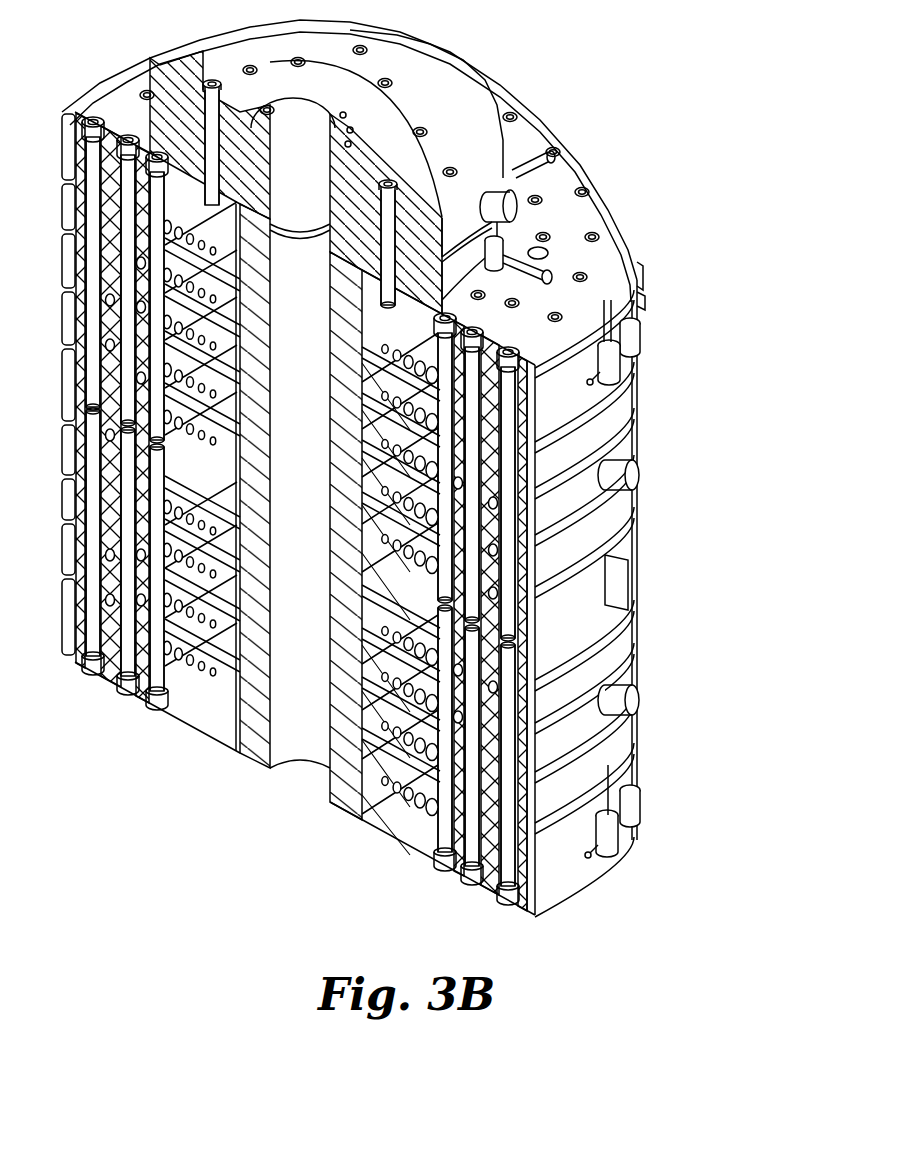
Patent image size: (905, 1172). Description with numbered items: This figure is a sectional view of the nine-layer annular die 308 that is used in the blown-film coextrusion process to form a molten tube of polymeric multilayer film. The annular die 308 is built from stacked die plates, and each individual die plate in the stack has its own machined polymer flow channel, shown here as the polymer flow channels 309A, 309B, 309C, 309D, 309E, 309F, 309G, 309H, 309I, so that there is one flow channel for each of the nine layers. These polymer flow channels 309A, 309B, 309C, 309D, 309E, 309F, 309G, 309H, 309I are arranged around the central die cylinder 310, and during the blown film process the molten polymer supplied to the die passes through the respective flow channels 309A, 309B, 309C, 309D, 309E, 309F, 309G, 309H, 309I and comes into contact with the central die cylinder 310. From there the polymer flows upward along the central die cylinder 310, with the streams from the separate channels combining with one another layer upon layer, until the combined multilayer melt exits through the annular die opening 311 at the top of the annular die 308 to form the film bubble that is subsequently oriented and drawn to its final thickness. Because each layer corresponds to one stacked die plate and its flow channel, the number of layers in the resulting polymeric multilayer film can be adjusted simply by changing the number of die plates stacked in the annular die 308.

The annular die 308 is at (396, 471).
The polymer flow channel 309A is at (449, 375).
The polymer flow channel 309B is at (449, 422).
The polymer flow channel 309C is at (449, 470).
The polymer flow channel 309D is at (449, 517).
The polymer flow channel 309E is at (449, 565).
The polymer flow channel 309F is at (449, 657).
The polymer flow channel 309G is at (449, 703).
The polymer flow channel 309H is at (449, 752).
The polymer flow channel 309I is at (436, 818).
The central die cylinder 310 is at (237, 753).
The annular die opening 311 is at (367, 122).